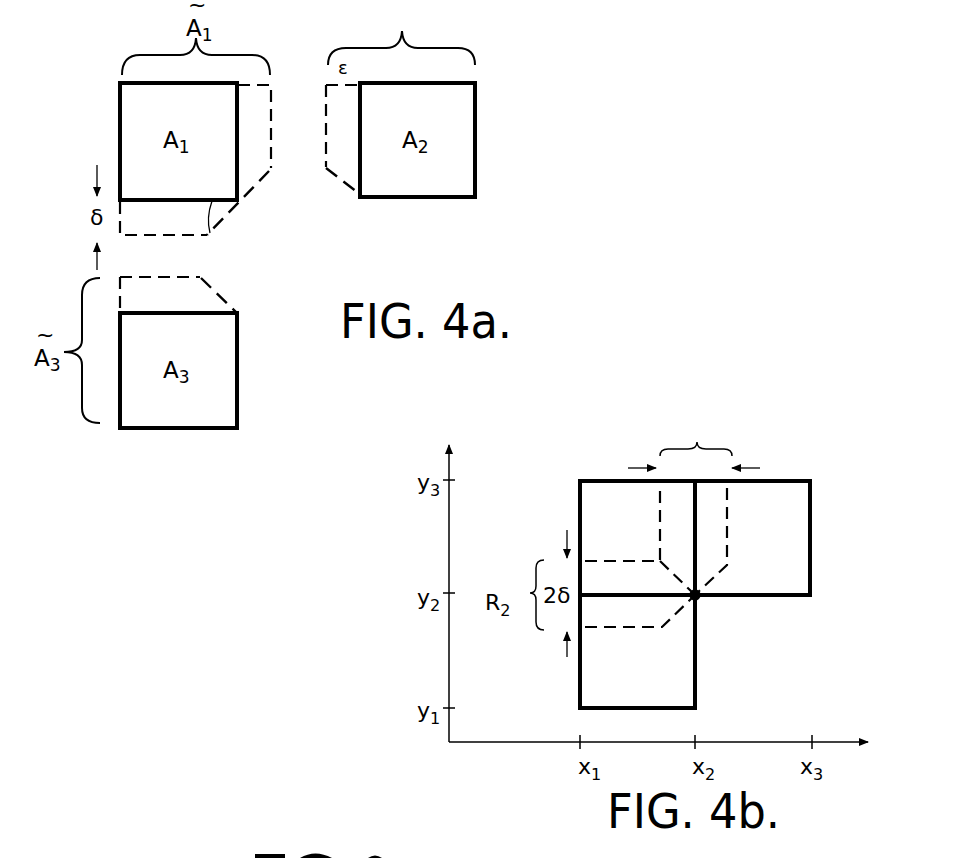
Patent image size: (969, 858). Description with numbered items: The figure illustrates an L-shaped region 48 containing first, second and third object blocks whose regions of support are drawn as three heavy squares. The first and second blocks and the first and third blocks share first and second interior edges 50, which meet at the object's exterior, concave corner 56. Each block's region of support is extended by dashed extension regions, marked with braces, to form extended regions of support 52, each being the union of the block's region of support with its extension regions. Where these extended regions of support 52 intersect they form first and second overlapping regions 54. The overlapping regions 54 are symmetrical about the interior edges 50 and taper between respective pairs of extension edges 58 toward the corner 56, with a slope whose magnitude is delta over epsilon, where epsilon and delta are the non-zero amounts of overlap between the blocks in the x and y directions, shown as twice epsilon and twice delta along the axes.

In FIG. 4B, the L-shaped region 48 is at (566, 478).
In FIG. 4A, the interior edges 50 is at (238, 175).
In FIG. 4A, the extended regions of support 52 is at (475, 64).
In FIG. 4B, the overlapping regions 54 is at (723, 450).
In FIG. 4B, the corner 56 is at (699, 600).
In FIG. 4A, the extension edges 58 is at (325, 121).